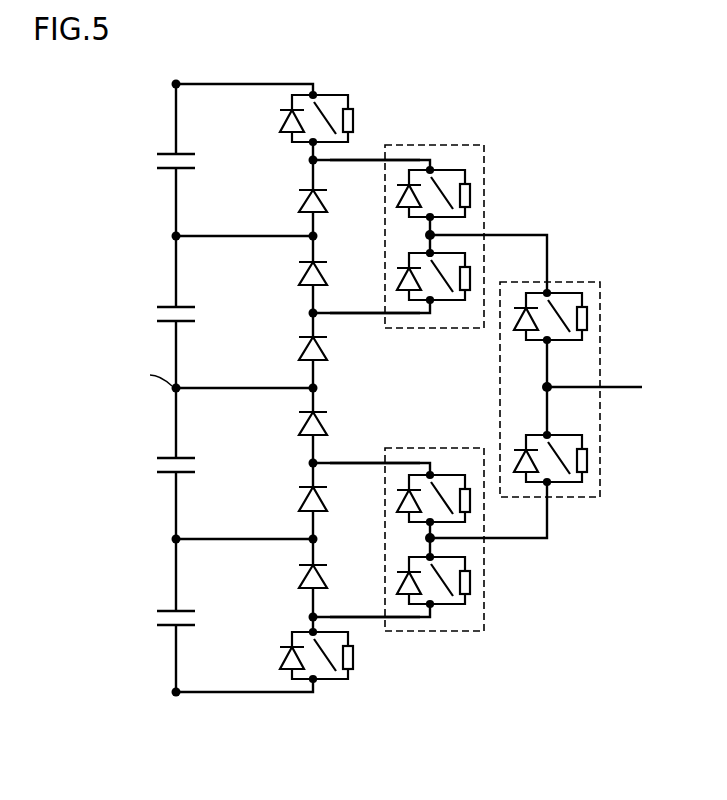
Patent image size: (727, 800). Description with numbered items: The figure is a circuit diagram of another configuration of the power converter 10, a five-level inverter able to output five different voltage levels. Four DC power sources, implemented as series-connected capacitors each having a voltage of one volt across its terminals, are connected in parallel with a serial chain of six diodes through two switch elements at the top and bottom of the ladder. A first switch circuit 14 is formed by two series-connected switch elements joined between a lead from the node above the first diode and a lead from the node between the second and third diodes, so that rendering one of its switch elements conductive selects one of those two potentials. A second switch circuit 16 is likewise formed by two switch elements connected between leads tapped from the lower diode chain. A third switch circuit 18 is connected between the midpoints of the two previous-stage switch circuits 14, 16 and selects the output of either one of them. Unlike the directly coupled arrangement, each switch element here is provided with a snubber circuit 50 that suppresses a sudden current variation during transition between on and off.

The power converter 10 is at (560, 53).
The switch circuit 14 is at (484, 172).
The switch circuit 16 is at (484, 604).
The switch circuit 18 is at (600, 356).
The snubber circuit 50 is at (353, 121).